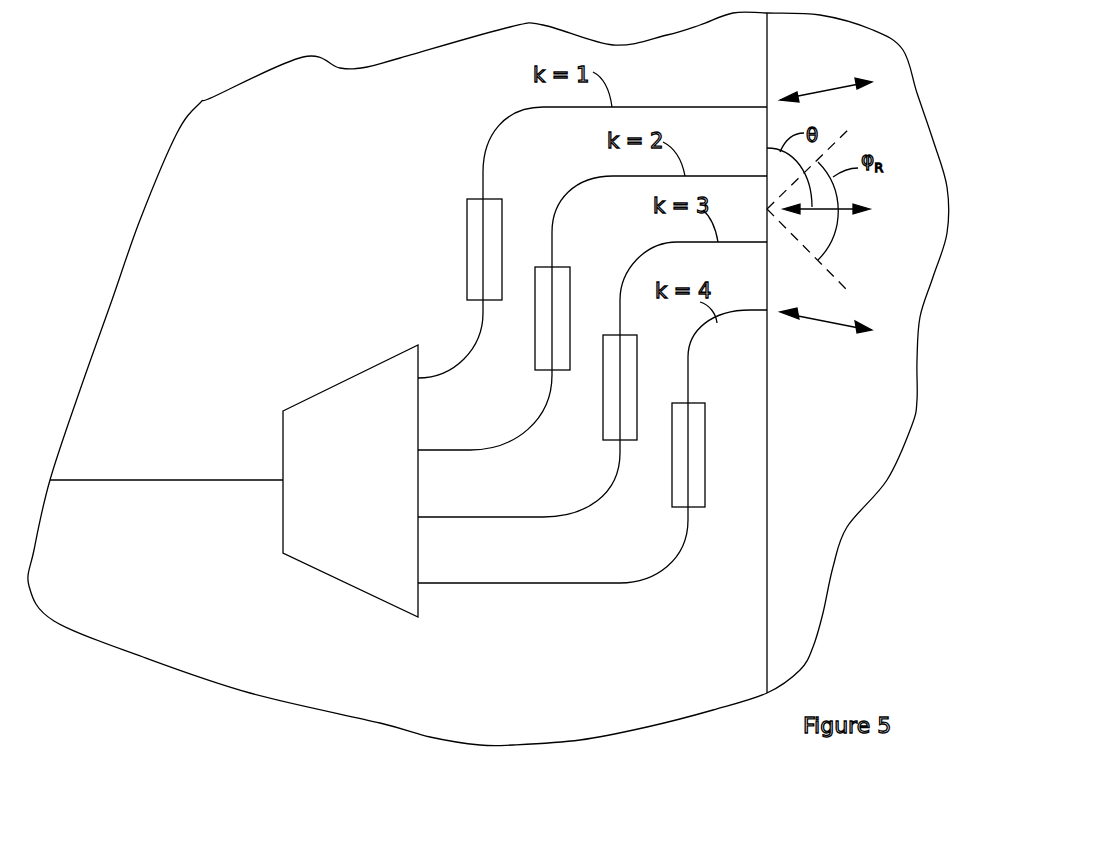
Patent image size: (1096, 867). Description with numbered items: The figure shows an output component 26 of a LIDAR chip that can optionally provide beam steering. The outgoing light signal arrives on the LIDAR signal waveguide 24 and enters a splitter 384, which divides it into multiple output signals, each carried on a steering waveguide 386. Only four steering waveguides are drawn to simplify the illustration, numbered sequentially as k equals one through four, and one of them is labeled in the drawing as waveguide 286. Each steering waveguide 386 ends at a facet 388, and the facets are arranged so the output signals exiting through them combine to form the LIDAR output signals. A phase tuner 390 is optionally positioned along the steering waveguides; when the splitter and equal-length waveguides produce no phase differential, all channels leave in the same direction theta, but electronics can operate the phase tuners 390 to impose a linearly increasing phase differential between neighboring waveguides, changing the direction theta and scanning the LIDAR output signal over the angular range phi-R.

The LIDAR signal waveguide 24 is at (168, 480).
The output component 26 is at (338, 243).
The splitter 384 is at (375, 364).
The steering waveguide 386 is at (528, 427).
The waveguide 286 is at (653, 248).
The facet 388 is at (767, 107).
The phase tuner 390 is at (467, 243).